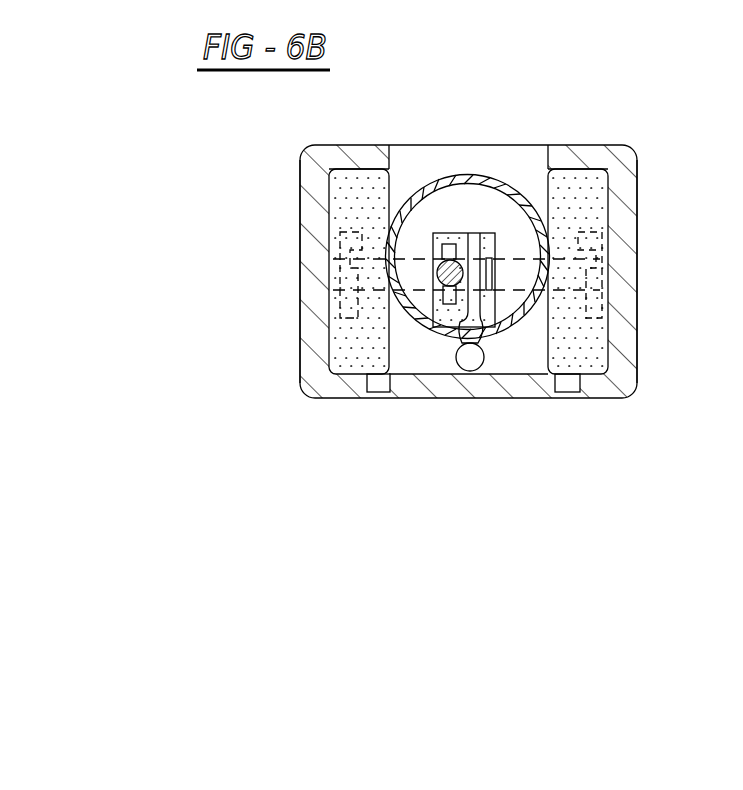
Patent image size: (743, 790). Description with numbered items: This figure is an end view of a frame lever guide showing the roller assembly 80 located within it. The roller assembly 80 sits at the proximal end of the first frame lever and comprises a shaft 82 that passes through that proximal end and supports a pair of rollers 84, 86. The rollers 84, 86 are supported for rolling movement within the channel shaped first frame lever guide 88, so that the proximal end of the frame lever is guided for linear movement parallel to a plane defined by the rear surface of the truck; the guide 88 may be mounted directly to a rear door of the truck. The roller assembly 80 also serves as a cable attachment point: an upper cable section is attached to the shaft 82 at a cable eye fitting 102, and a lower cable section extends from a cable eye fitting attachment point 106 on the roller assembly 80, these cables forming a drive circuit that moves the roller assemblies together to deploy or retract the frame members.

The roller assembly 80 is at (397, 347).
The shaft 82 is at (527, 328).
The roller 84 is at (347, 217).
The roller 86 is at (590, 226).
The first frame lever guide 88 is at (318, 302).
The cable eye fitting 102 is at (478, 250).
The cable eye fitting attachment point 106 is at (445, 244).